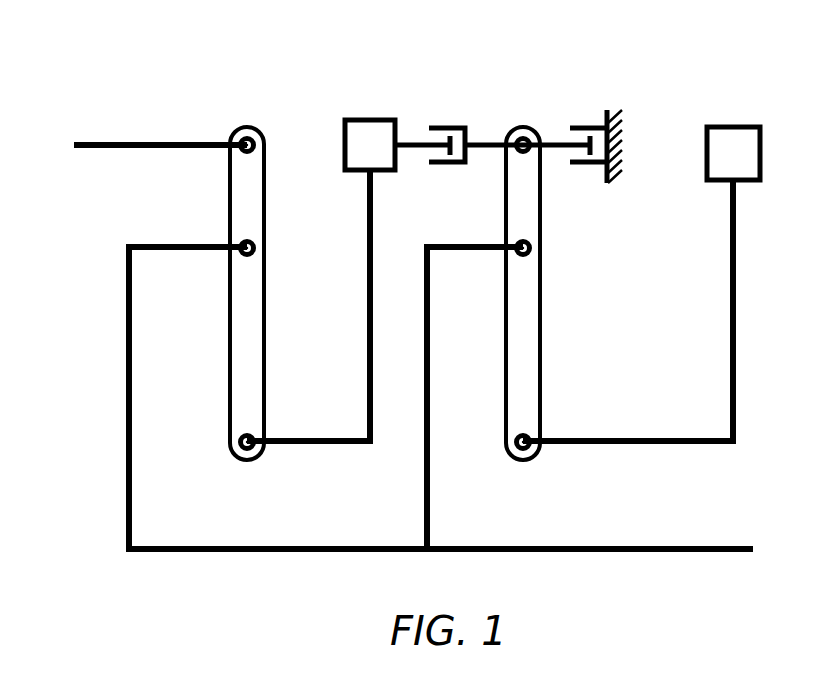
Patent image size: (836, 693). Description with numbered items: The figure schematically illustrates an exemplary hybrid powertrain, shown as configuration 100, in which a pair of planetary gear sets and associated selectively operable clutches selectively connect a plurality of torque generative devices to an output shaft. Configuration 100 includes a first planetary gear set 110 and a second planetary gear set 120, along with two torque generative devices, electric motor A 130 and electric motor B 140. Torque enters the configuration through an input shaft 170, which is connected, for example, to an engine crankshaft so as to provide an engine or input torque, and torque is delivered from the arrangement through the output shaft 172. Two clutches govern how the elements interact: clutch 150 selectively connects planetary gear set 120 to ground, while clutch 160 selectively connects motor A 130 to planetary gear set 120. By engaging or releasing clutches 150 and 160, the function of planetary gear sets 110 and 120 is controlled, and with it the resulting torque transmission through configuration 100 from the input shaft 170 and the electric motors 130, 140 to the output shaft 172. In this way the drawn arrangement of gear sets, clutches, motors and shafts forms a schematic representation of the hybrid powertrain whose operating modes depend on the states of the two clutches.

The configuration 100 is at (121, 74).
The planetary gear set 110 is at (258, 462).
The planetary gear set 120 is at (531, 462).
The electric motor A 130 is at (365, 117).
The electric motor B 140 is at (738, 125).
The clutch 150 is at (590, 112).
The clutch 160 is at (447, 117).
The input shaft 170 is at (117, 142).
The output shaft 172 is at (686, 556).